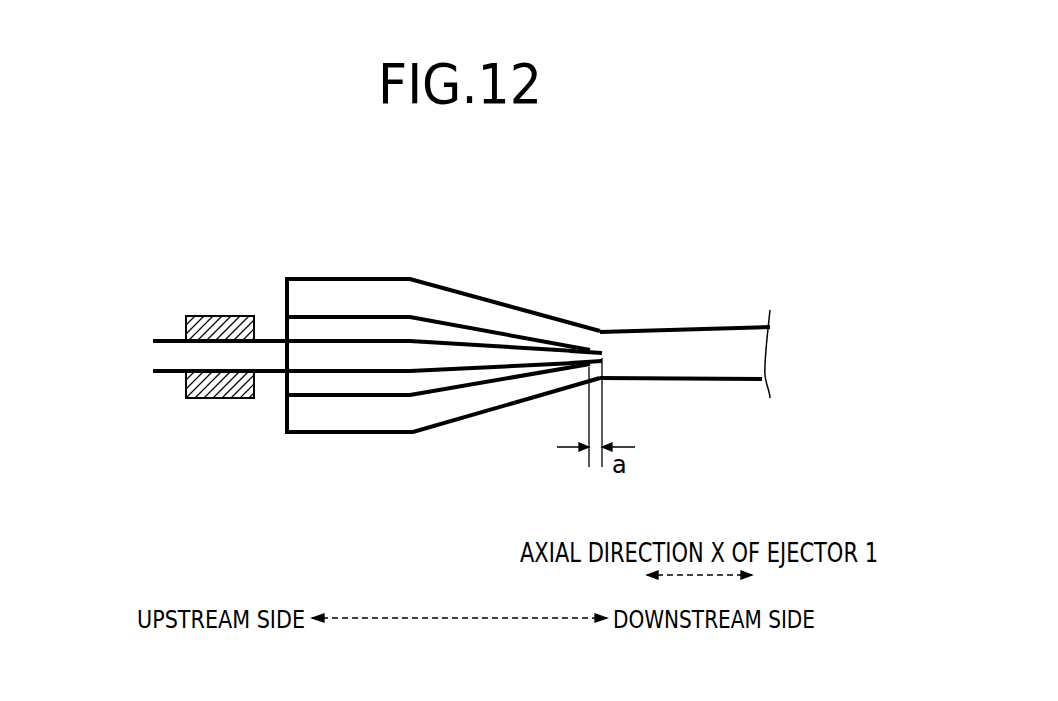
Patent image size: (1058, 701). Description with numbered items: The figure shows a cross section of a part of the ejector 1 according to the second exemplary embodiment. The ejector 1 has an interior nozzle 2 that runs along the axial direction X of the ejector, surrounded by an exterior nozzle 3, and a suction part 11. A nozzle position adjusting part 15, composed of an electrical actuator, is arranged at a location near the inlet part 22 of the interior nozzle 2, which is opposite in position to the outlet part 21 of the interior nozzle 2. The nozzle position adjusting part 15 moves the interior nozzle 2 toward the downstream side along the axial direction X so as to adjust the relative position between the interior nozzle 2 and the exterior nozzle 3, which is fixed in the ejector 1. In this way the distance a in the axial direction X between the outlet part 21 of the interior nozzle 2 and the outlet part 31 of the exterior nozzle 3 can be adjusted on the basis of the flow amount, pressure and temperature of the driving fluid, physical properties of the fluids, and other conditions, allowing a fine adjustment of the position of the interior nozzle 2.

The ejector 1 is at (599, 255).
The interior nozzle 2 is at (373, 372).
The exterior nozzle 3 is at (480, 327).
The suction part 11 is at (428, 407).
The nozzle position adjusting part 15 is at (220, 380).
The outlet part 21 is at (600, 348).
The inlet part 22 is at (162, 361).
The outlet part 31 is at (605, 352).